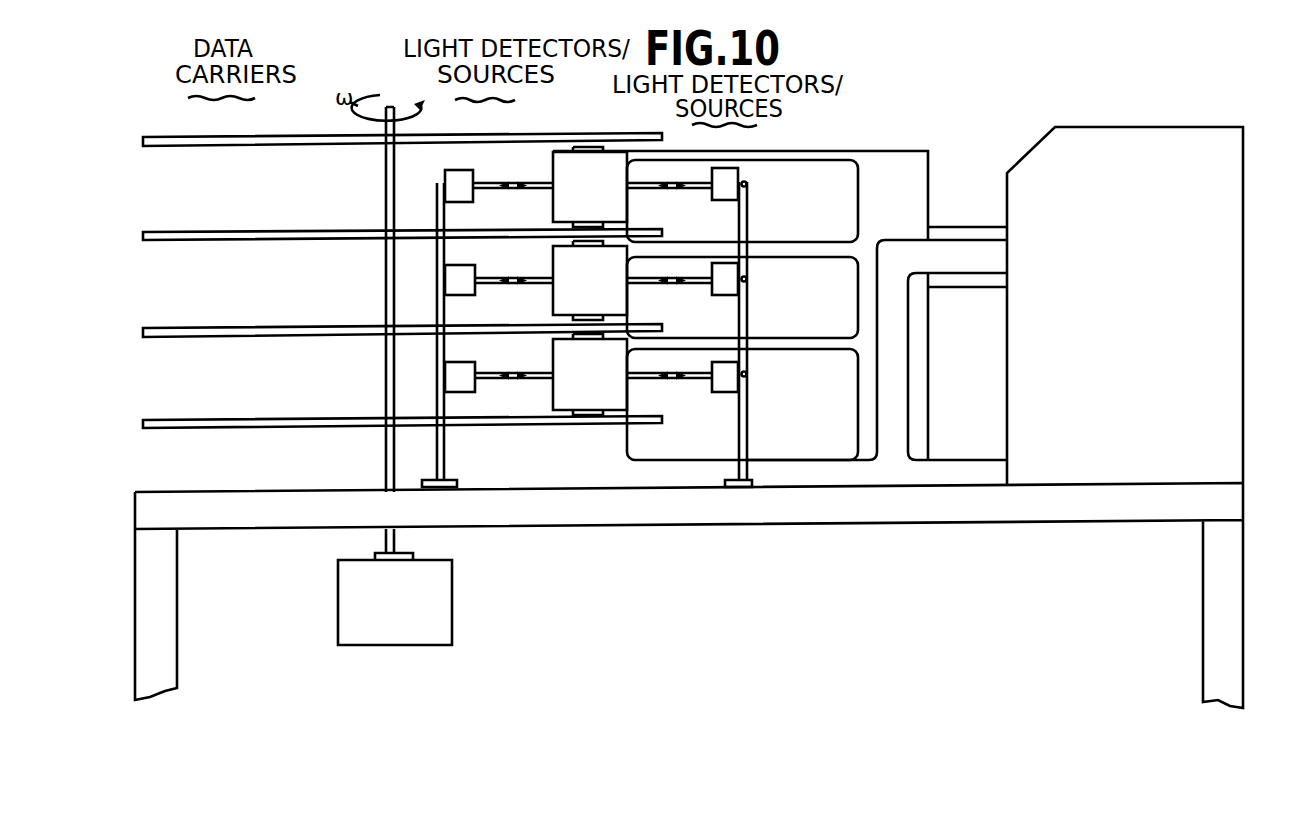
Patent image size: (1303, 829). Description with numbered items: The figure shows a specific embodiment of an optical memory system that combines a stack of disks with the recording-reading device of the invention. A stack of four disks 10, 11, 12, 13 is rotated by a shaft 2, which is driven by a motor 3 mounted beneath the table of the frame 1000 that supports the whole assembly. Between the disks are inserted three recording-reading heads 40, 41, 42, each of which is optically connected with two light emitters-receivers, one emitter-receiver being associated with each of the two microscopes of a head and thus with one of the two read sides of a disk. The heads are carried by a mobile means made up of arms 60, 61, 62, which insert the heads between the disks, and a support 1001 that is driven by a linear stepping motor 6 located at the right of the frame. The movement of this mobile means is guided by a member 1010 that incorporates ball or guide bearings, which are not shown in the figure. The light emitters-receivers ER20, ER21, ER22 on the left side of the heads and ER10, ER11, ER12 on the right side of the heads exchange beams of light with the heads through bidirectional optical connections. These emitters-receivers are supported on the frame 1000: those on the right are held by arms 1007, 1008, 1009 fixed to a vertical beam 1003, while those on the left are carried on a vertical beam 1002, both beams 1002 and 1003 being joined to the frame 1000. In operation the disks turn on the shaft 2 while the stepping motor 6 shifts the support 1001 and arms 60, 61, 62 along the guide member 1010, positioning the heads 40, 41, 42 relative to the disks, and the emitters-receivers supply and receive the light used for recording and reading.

The shaft 2 is at (396, 112).
The motor 3 is at (500, 604).
The linear stepping motor 6 is at (1107, 122).
The disk 10 is at (203, 138).
The disk 11 is at (205, 232).
The disk 12 is at (203, 327).
The disk 13 is at (212, 400).
The recording-reading head 40 is at (592, 187).
The recording-reading head 41 is at (593, 280).
The recording-reading head 42 is at (593, 374).
The arm 60 is at (806, 158).
The arm 61 is at (810, 255).
The arm 62 is at (806, 347).
The frame 1000 is at (198, 520).
The support 1001 is at (913, 205).
The beam 1002 is at (446, 452).
The beam 1003 is at (740, 450).
The arm 1007 is at (748, 184).
The arm 1008 is at (748, 280).
The arm 1009 is at (748, 375).
The guide member 1010 is at (888, 455).
The light emitter-receiver ER10 is at (722, 192).
The light emitter-receiver ER11 is at (722, 288).
The light emitter-receiver ER12 is at (722, 384).
The light emitter-receiver ER20 is at (463, 193).
The light emitter-receiver ER21 is at (463, 288).
The light emitter-receiver ER22 is at (463, 385).